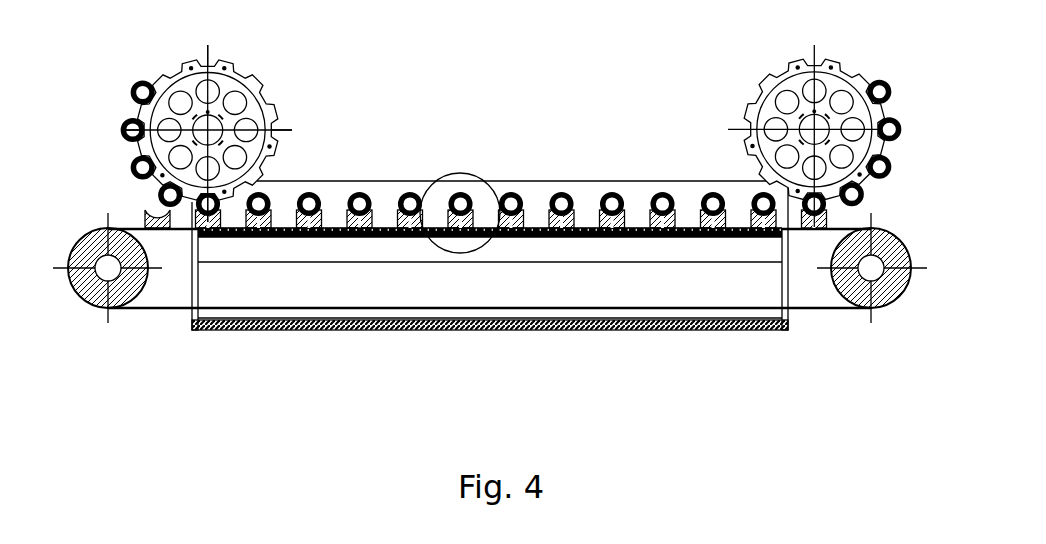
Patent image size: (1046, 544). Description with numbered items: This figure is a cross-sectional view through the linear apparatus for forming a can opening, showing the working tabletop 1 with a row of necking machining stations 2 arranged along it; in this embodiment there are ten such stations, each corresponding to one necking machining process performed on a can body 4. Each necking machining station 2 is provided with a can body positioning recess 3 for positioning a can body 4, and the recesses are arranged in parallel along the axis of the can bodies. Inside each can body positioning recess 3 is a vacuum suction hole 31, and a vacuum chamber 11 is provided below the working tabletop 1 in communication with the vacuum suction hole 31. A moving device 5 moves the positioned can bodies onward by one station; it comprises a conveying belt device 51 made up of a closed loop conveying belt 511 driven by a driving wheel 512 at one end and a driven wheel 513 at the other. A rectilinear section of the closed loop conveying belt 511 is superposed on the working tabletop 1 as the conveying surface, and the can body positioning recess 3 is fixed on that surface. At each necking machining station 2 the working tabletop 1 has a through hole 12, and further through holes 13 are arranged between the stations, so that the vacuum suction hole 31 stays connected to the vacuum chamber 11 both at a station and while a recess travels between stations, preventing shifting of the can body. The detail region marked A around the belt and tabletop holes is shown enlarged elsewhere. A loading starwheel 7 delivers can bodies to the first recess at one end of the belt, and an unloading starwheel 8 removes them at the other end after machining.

The working tabletop 1 is at (373, 238).
The necking machining station 2 is at (362, 174).
The can body positioning recess 3 is at (362, 232).
The can body 4 is at (357, 203).
The moving device 5 is at (485, 322).
The conveying belt device 51 is at (143, 323).
The loading starwheel 7 is at (255, 88).
The unloading starwheel 8 is at (840, 73).
The vacuum chamber 11 is at (336, 262).
The through hole 12 is at (307, 238).
The through hole 13 is at (290, 238).
The vacuum suction hole 31 is at (360, 238).
The closed loop conveying belt 511 is at (132, 227).
The driving wheel 512 is at (93, 302).
The driven wheel 513 is at (857, 306).
The area A is at (484, 174).